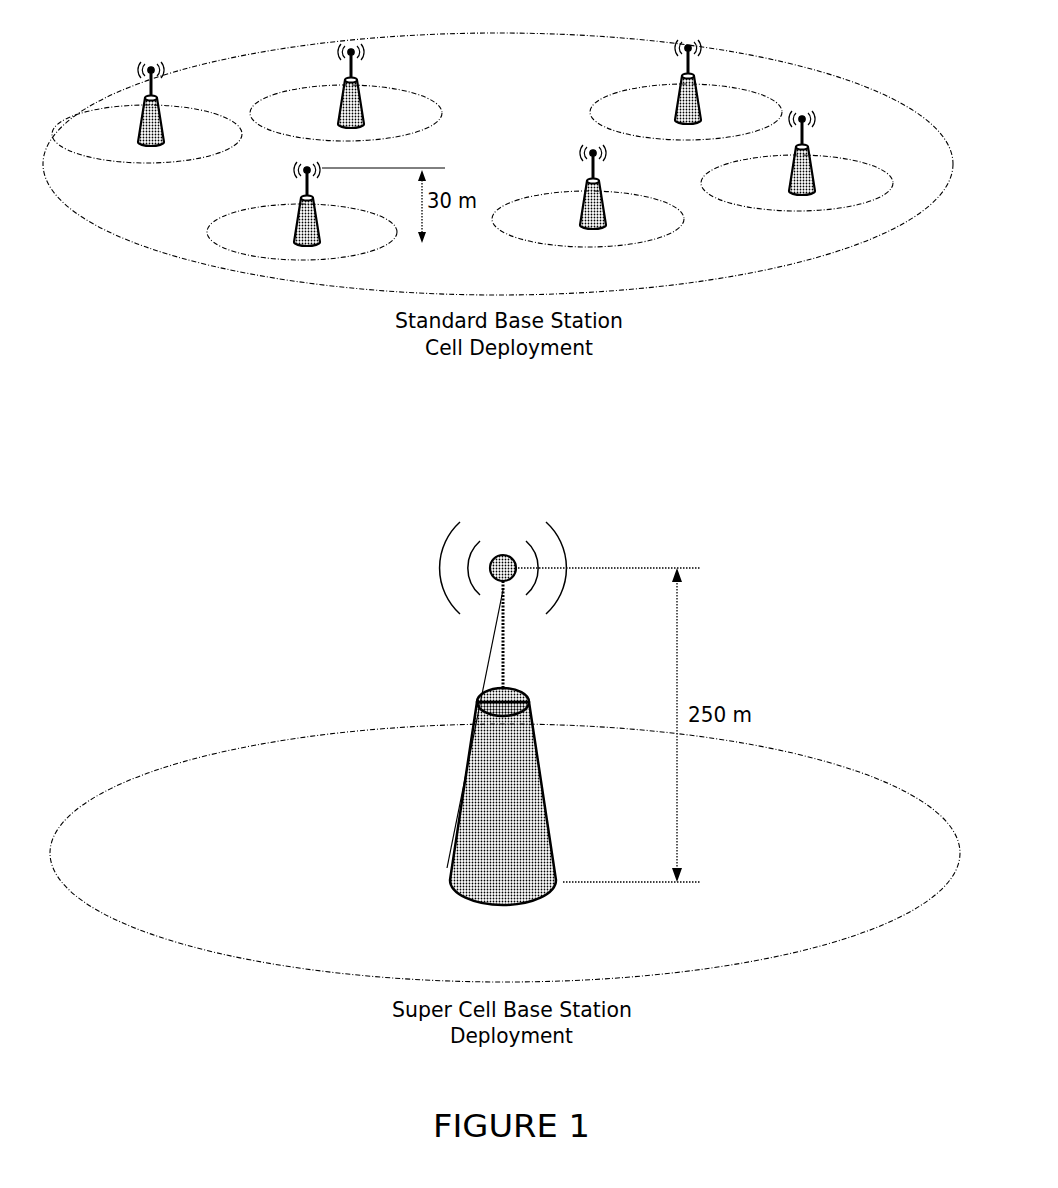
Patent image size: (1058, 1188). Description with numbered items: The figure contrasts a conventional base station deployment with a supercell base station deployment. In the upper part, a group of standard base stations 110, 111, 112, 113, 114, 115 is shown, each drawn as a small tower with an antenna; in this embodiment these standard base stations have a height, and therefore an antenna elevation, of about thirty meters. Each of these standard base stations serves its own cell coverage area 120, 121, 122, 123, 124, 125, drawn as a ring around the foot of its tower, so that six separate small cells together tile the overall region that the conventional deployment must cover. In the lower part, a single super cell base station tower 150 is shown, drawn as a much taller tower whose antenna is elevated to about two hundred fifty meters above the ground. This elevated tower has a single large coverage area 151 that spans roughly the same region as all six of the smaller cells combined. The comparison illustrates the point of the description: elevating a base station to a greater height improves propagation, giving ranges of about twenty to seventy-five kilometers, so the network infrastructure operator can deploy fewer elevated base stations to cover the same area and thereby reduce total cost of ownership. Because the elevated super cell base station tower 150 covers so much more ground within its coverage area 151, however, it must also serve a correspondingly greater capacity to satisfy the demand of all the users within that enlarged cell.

The standard base station 110 is at (157, 97).
The standard base station 111 is at (354, 80).
The standard base station 112 is at (304, 196).
The standard base station 113 is at (590, 181).
The standard base station 114 is at (682, 79).
The standard base station 115 is at (809, 147).
The cell coverage area 120 is at (181, 148).
The cell coverage area 121 is at (418, 113).
The cell coverage area 122 is at (234, 230).
The cell coverage area 123 is at (537, 239).
The cell coverage area 124 is at (623, 110).
The cell coverage area 125 is at (778, 196).
The super cell base station tower 150 is at (495, 712).
The coverage area 151 is at (250, 901).